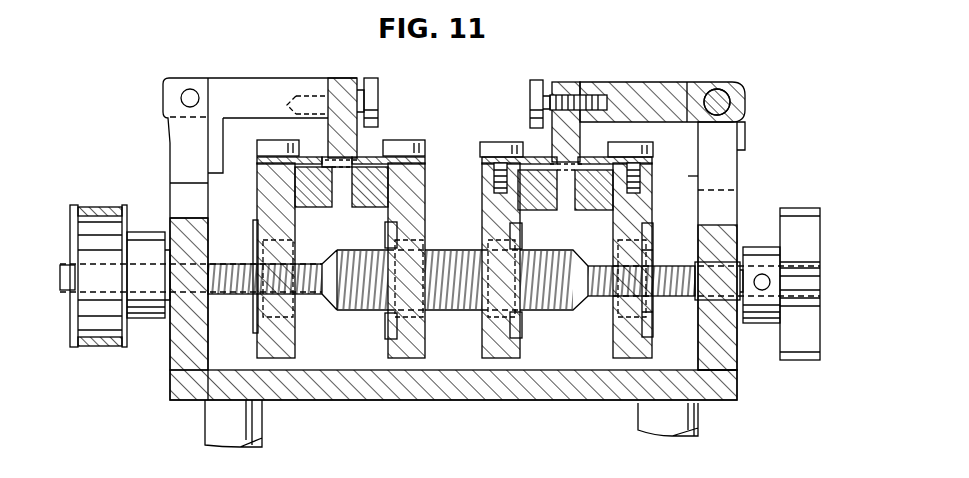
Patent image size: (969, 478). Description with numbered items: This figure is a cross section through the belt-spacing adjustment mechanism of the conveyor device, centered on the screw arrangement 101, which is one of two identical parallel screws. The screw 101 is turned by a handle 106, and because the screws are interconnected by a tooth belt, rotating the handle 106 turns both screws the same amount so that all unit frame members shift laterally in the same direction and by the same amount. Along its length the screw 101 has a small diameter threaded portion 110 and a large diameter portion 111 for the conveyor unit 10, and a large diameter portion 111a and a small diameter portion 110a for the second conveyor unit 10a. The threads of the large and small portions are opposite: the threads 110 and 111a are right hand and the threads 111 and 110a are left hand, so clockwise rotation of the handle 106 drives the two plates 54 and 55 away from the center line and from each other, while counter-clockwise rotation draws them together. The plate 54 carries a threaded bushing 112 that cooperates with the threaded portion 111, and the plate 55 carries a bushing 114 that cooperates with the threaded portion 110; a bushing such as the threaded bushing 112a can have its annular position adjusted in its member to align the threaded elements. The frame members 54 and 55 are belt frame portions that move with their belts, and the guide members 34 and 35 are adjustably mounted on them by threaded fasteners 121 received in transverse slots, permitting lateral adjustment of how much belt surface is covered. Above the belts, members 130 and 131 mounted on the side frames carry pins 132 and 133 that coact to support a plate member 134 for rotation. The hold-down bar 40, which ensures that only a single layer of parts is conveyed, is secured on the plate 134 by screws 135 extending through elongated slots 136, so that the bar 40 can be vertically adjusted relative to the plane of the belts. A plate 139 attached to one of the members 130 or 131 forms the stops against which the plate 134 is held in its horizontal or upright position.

The conveyor unit 10 is at (562, 243).
The conveyor unit 10a is at (349, 74).
The guide member 34 is at (537, 158).
The guide member 35 is at (652, 167).
The hold-down bar 40 is at (581, 122).
The unit frame member 54 is at (503, 355).
The unit frame member 55 is at (615, 356).
The screw arrangement 101 is at (449, 284).
The handle 106 is at (790, 212).
The small diameter threaded portion 110 is at (592, 300).
The small diameter portion 110a is at (241, 294).
The large diameter portion 111 is at (468, 311).
The large diameter portion 111a is at (352, 310).
The threaded bushing 112 is at (522, 242).
The threaded bushing 112a is at (385, 226).
The bushing 114 is at (653, 250).
The threaded fastener 121 is at (493, 140).
The member 130 is at (170, 160).
The member 131 is at (728, 148).
The pin 132 is at (195, 91).
The pin 133 is at (722, 90).
The plate member 134 is at (632, 92).
The screw 135 is at (538, 80).
The elongated slot 136 is at (572, 113).
The plate 139 is at (688, 176).